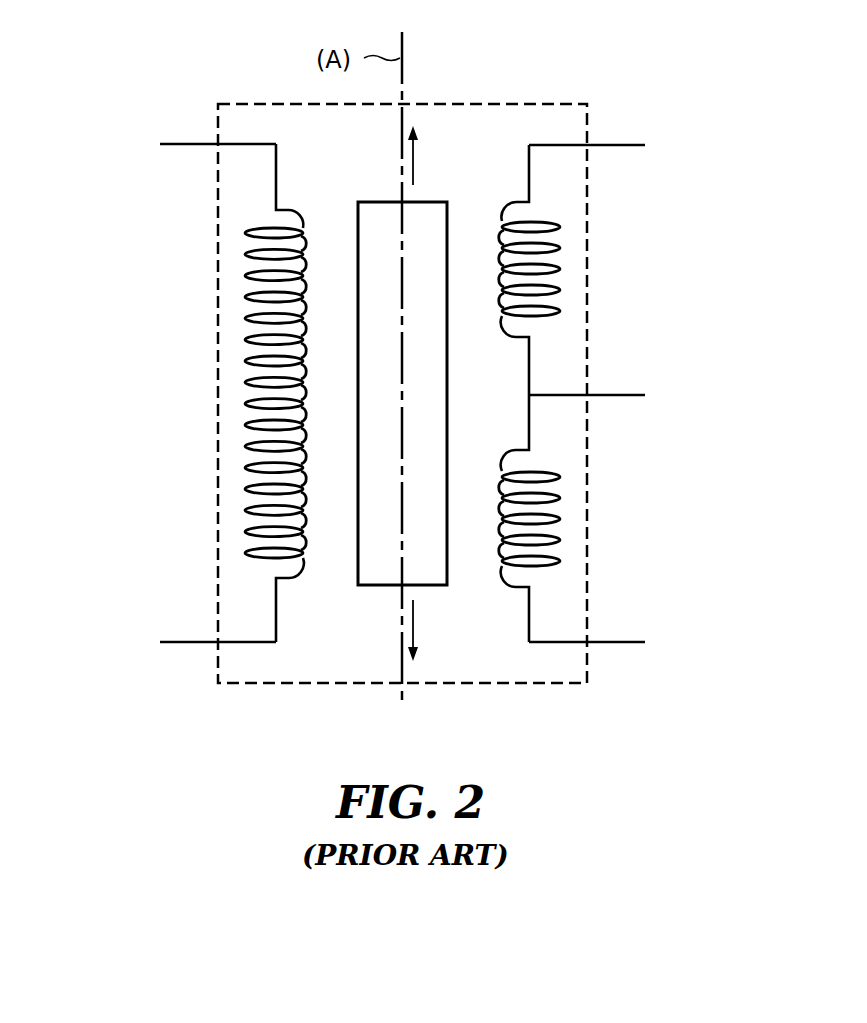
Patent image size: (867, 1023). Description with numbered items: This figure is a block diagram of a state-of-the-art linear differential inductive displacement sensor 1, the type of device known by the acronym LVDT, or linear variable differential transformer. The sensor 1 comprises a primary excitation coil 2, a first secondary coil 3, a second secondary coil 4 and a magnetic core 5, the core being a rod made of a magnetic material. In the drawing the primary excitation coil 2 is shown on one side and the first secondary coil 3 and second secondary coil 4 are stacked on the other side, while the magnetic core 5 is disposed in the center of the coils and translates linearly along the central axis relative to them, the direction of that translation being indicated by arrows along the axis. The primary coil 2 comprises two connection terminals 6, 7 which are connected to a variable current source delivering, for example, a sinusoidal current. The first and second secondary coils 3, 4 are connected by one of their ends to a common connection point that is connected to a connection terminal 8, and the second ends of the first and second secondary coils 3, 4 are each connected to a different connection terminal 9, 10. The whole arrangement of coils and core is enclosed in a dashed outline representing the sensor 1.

The linear differential inductive displacement sensor 1 is at (646, 84).
The primary excitation coil 2 is at (293, 197).
The first secondary coil 3 is at (510, 197).
The second secondary coil 4 is at (507, 590).
The magnetic core 5 is at (376, 198).
The connection terminal 6 is at (162, 144).
The connection terminal 7 is at (162, 642).
The connection terminal 8 is at (643, 396).
The connection terminal 9 is at (643, 146).
The connection terminal 10 is at (643, 643).